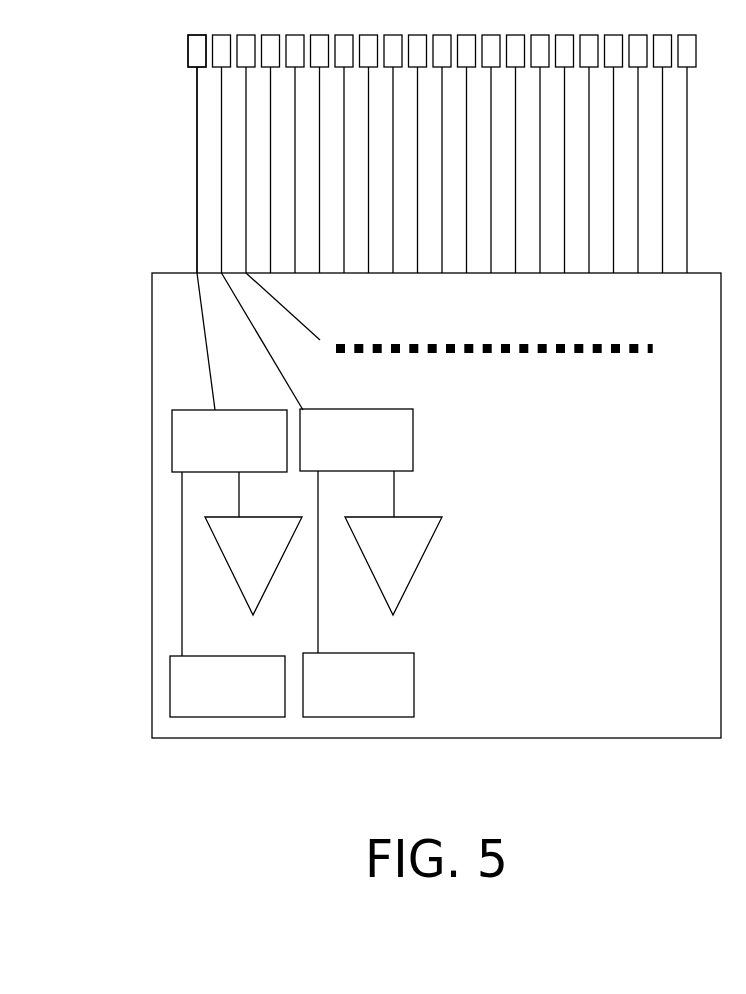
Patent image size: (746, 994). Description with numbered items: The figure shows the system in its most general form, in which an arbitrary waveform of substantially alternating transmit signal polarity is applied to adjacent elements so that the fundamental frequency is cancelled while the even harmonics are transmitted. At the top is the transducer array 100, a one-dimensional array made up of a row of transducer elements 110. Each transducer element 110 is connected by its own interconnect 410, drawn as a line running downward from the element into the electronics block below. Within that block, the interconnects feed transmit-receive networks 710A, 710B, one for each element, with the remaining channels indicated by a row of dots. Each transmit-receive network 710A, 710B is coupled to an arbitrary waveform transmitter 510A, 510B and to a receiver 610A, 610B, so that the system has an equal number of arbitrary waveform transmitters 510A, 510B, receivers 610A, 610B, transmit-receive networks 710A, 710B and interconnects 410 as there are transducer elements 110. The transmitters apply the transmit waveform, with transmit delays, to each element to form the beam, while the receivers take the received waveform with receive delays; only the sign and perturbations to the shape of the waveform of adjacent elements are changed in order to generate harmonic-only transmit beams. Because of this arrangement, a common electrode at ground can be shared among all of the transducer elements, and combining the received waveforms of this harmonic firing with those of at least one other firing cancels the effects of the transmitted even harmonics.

The transducer array 100 is at (150, 12).
The transducer element 110 is at (182, 64).
The interconnect 410 is at (191, 127).
The transmit-receive network 710A is at (229, 441).
The transmit-receive network 710B is at (356, 440).
The receiver 610A is at (253, 566).
The receiver 610B is at (393, 566).
The arbitrary waveform transmitter 510A is at (227, 686).
The arbitrary waveform transmitter 510B is at (358, 685).